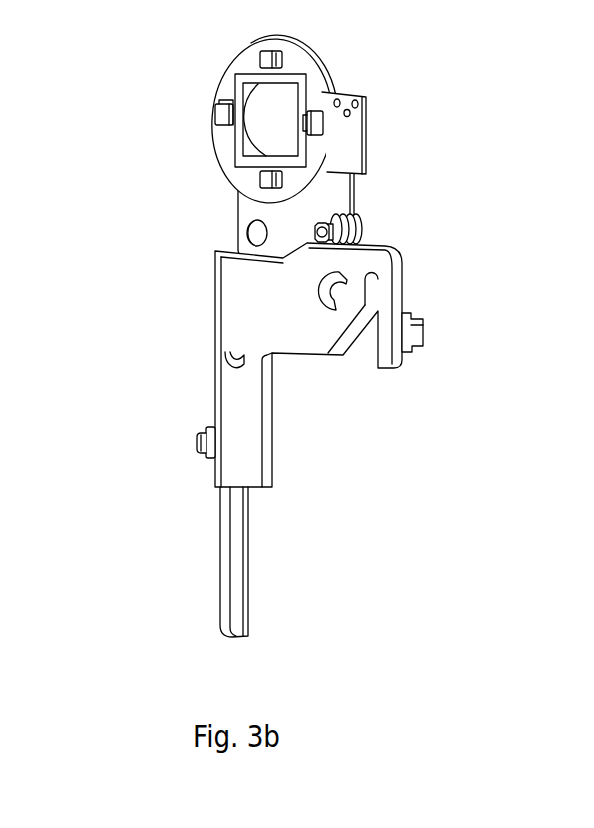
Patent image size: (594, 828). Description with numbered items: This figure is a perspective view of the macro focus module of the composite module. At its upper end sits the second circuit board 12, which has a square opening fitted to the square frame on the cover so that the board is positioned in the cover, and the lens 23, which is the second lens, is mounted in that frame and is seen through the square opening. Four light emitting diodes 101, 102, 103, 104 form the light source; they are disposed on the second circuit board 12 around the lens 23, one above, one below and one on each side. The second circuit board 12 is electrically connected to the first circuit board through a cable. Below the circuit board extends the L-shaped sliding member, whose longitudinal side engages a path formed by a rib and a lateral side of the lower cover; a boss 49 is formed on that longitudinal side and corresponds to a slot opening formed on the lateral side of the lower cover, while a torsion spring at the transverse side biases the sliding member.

The second circuit board 12 is at (345, 163).
The lens 23 is at (288, 112).
The light emitting diode 101 is at (221, 118).
The light emitting diode 102 is at (258, 60).
The light emitting diode 103 is at (323, 122).
The light emitting diode 104 is at (268, 181).
The boss 49 is at (197, 440).